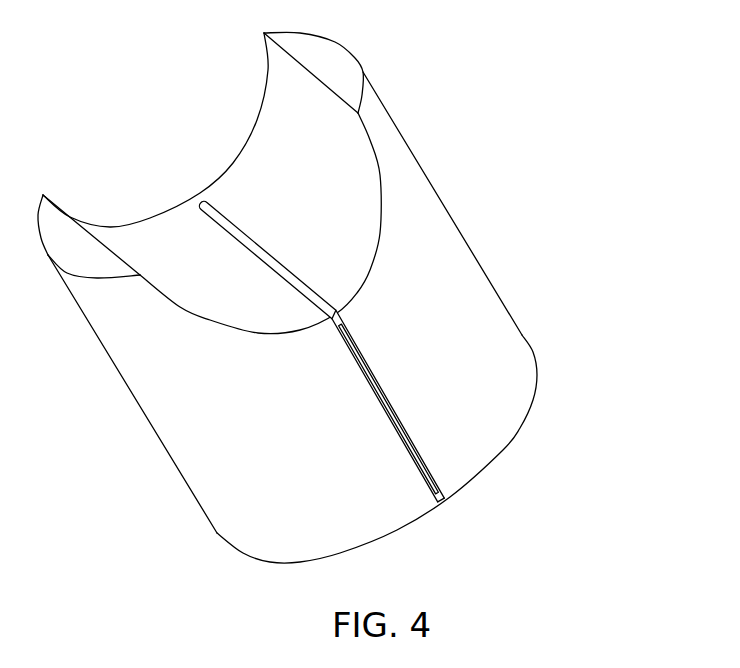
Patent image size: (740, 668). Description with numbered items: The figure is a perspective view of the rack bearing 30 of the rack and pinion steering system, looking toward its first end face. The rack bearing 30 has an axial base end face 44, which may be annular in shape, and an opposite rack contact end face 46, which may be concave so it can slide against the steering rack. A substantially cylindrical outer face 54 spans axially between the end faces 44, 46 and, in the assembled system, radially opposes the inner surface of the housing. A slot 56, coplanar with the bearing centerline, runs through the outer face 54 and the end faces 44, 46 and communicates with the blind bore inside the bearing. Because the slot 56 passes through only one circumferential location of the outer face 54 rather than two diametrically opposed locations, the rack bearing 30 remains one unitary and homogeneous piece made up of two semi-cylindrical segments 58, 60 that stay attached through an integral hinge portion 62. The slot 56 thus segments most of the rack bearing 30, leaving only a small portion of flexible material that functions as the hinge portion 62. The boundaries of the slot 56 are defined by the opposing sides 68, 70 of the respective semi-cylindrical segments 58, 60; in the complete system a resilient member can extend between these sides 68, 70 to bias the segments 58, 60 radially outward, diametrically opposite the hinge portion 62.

The rack bearing 30 is at (310, 297).
The axial base end face 44 is at (507, 447).
The rack contact end face 46 is at (144, 243).
The outer face 54 is at (490, 277).
The slot 56 is at (446, 500).
The semi-cylindrical segment 58 is at (152, 460).
The semi-cylindrical segment 60 is at (276, 182).
The hinge portion 62 is at (319, 348).
The side 68 is at (423, 452).
The side 70 is at (402, 422).